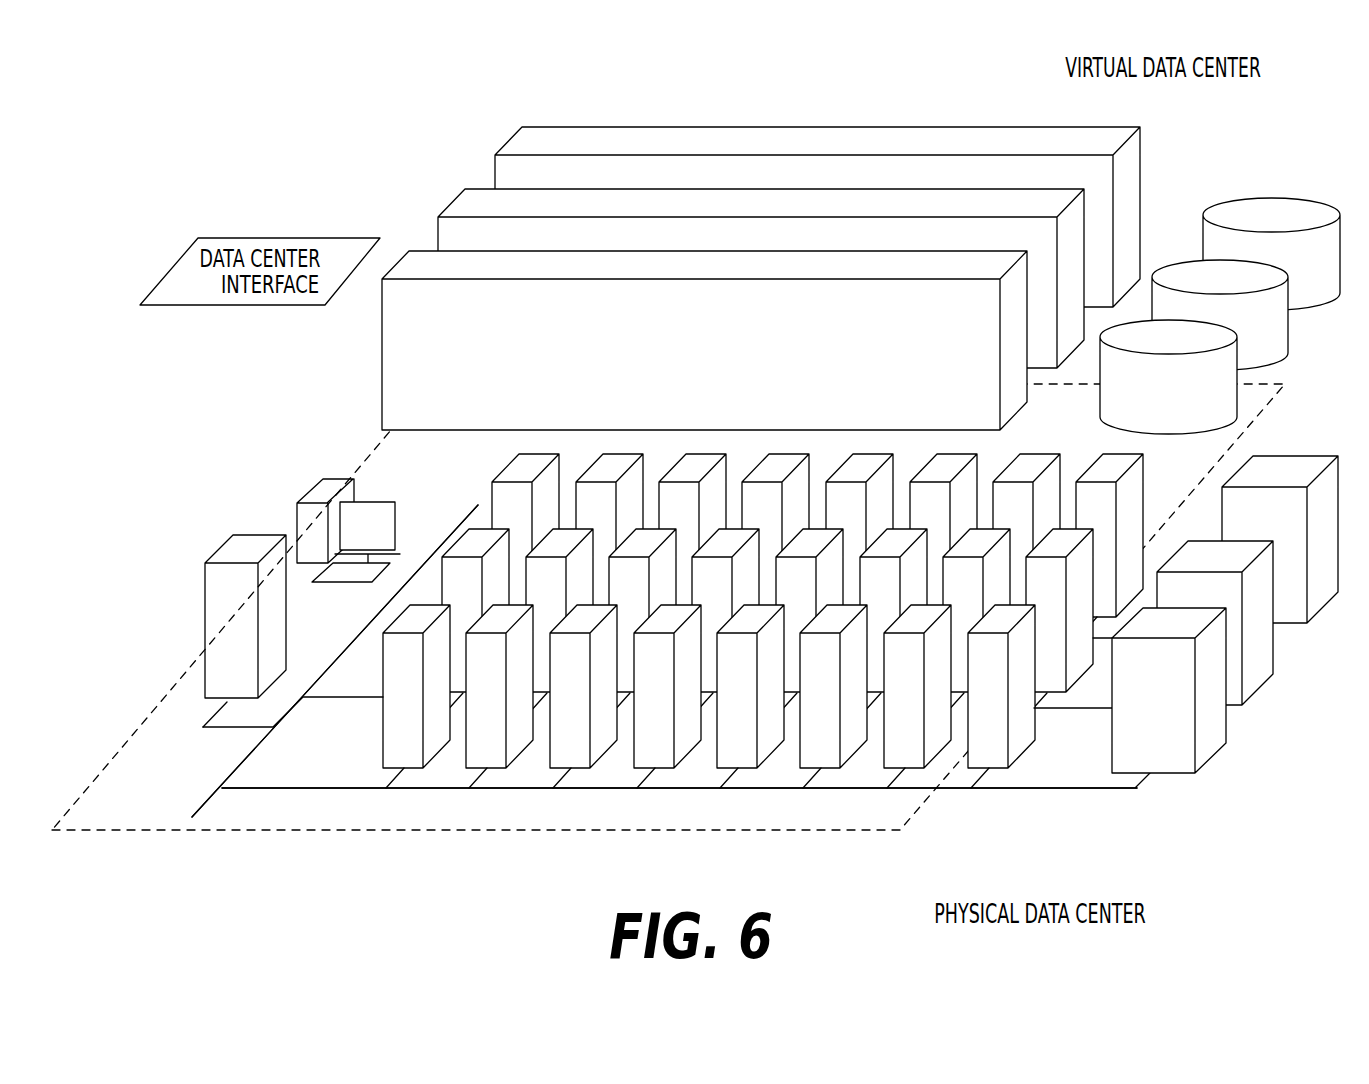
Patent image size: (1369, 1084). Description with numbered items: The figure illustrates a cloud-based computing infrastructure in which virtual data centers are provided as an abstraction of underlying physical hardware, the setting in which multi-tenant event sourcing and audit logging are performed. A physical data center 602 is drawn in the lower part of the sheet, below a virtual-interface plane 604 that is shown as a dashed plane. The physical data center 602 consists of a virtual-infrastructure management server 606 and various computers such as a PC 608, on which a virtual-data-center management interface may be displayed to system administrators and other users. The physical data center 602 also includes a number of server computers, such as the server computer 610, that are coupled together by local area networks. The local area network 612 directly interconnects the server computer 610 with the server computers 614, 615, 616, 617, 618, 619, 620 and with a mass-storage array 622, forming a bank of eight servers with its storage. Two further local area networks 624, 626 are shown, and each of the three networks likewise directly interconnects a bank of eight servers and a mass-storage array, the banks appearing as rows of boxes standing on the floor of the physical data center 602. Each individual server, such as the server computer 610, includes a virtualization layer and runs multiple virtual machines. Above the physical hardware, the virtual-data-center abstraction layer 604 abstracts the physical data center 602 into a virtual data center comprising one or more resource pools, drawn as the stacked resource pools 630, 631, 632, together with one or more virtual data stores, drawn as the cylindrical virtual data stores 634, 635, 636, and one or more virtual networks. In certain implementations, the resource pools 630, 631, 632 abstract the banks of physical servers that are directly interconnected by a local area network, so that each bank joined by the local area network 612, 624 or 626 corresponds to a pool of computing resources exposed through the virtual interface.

The physical data center 602 is at (745, 661).
The virtual-interface plane 604 is at (212, 878).
The virtual-infrastructure management server 606 is at (245, 533).
The PC 608 is at (318, 490).
The server computer 610 is at (393, 722).
The local area network 612 is at (340, 882).
The server computer 614 is at (463, 865).
The server computer 615 is at (545, 865).
The server computer 616 is at (633, 865).
The server computer 617 is at (713, 865).
The server computer 618 is at (798, 865).
The server computer 619 is at (878, 865).
The server computer 620 is at (1027, 832).
The mass-storage array 622 is at (1205, 818).
The local area network 624 is at (338, 695).
The local area network 626 is at (393, 589).
The resource pool 630 is at (422, 258).
The resource pool 631 is at (480, 200).
The resource pool 632 is at (540, 138).
The virtual data store 634 is at (1290, 437).
The virtual data store 635 is at (1318, 360).
The virtual data store 636 is at (1275, 210).